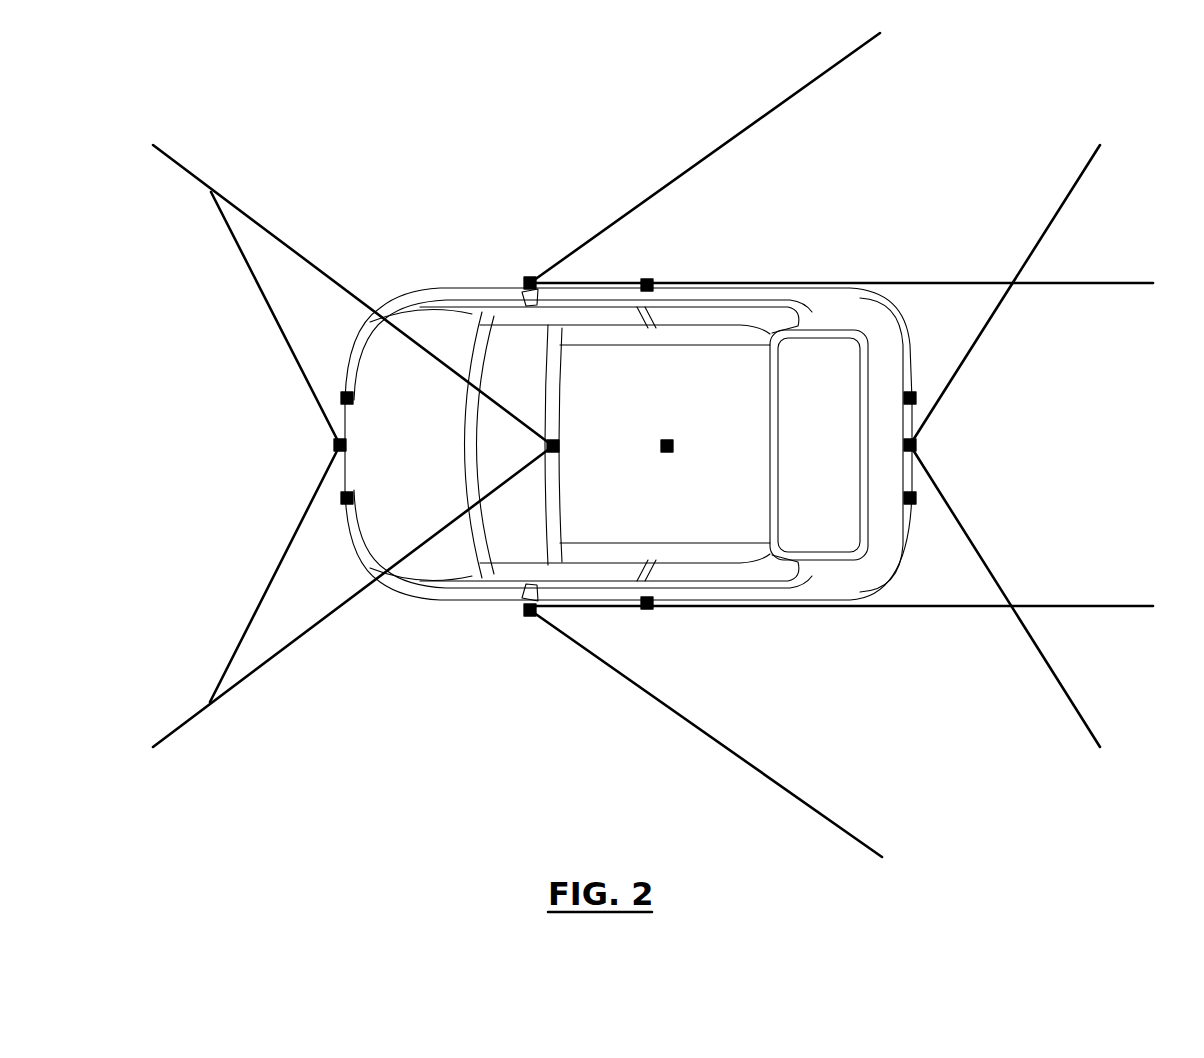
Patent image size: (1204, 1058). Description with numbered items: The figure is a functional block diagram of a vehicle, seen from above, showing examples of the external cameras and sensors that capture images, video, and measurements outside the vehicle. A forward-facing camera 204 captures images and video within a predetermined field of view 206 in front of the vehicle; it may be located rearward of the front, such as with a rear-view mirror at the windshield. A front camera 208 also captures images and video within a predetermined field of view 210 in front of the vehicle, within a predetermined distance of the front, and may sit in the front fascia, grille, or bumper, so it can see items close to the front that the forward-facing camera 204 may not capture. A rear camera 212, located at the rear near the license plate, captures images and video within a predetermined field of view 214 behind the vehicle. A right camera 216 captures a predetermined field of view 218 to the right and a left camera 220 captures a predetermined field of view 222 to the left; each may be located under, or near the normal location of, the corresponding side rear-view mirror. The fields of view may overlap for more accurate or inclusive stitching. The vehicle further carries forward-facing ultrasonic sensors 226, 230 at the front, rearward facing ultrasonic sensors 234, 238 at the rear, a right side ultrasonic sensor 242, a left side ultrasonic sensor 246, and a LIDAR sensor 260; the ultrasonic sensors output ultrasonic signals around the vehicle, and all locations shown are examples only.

The forward-facing camera 204 is at (559, 446).
The predetermined field of view 206 is at (322, 270).
The front camera 208 is at (338, 445).
The predetermined field of view 210 is at (255, 280).
The rear camera 212 is at (914, 445).
The predetermined field of view 214 is at (1083, 175).
The right camera 216 is at (530, 277).
The predetermined field of view 218 is at (787, 100).
The left camera 220 is at (530, 616).
The predetermined field of view 222 is at (773, 780).
The forward-facing ultrasonic sensor 226 is at (346, 398).
The forward-facing ultrasonic sensor 230 is at (345, 498).
The rearward facing ultrasonic sensor 234 is at (914, 398).
The rearward facing ultrasonic sensor 238 is at (914, 498).
The right side ultrasonic sensor 242 is at (650, 283).
The left side ultrasonic sensor 246 is at (650, 605).
The LIDAR sensor 260 is at (673, 446).